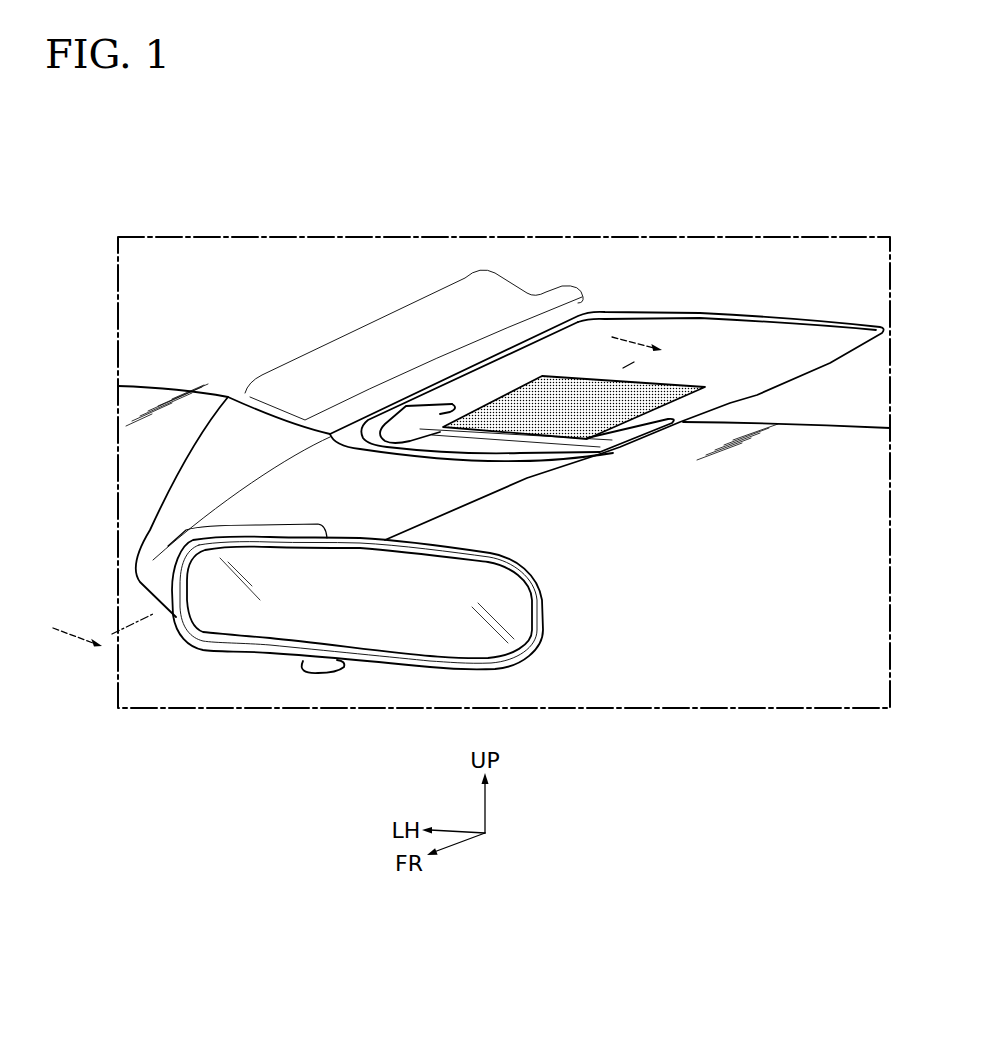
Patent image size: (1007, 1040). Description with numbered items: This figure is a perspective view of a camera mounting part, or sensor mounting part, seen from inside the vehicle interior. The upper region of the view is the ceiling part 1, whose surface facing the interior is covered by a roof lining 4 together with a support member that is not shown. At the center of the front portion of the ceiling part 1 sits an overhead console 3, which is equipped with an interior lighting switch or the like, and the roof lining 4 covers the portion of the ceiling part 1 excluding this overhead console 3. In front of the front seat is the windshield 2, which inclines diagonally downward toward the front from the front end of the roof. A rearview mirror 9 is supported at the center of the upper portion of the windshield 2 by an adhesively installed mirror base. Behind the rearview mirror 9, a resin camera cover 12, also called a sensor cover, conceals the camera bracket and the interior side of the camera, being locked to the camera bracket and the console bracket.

The ceiling part 1 is at (706, 280).
The windshield 2 is at (710, 476).
The overhead console 3 is at (775, 354).
The roof lining 4 is at (838, 412).
The rearview mirror 9 is at (270, 636).
The camera cover 12 is at (267, 480).